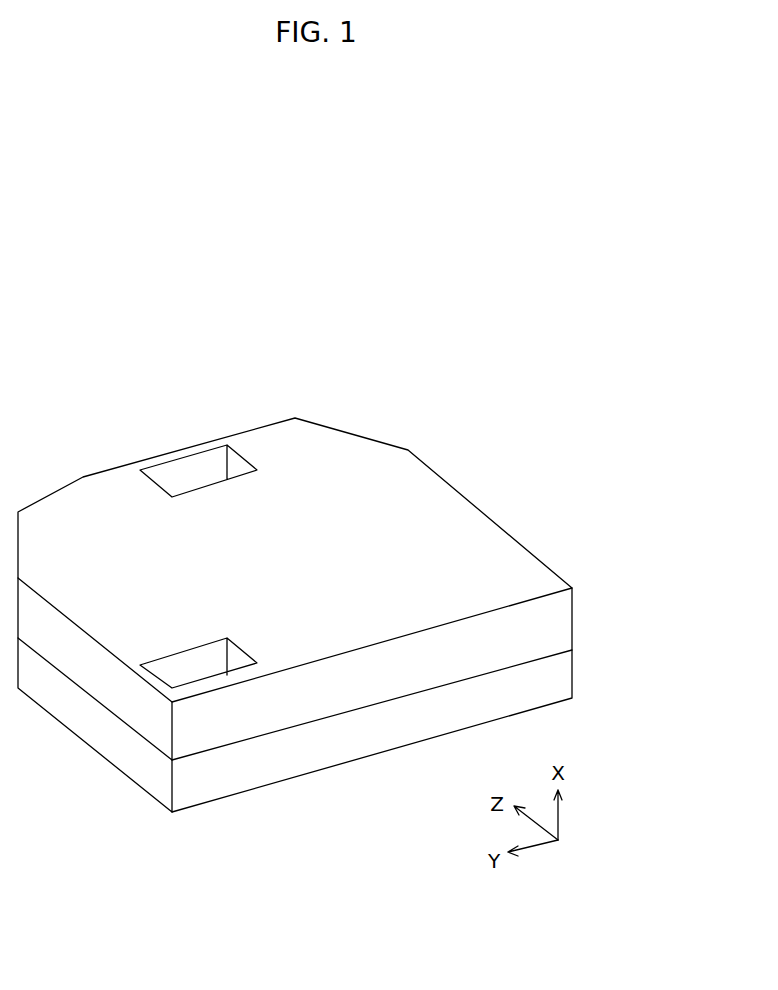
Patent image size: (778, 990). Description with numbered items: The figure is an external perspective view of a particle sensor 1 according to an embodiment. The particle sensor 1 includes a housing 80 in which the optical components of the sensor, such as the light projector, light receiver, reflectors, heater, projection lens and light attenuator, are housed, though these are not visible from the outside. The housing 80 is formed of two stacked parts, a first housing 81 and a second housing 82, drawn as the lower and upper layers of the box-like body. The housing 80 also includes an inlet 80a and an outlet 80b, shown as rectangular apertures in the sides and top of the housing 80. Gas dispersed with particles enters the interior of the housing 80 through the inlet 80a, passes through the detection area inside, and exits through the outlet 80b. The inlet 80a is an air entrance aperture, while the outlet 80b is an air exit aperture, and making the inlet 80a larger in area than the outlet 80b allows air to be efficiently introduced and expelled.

The particle sensor 1 is at (548, 446).
The housing 80 is at (636, 593).
The first housing 81 is at (558, 683).
The second housing 82 is at (558, 628).
The inlet 80a is at (177, 673).
The outlet 80b is at (172, 478).